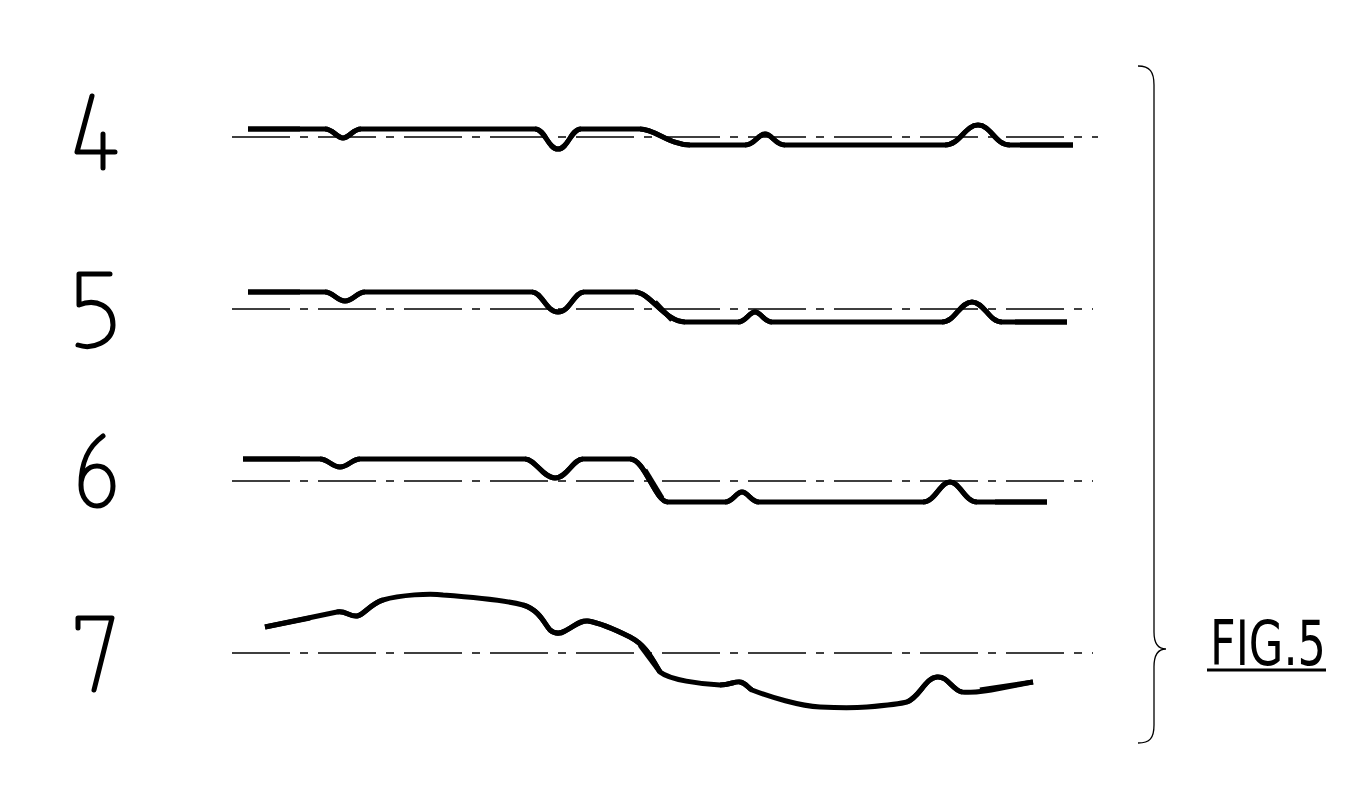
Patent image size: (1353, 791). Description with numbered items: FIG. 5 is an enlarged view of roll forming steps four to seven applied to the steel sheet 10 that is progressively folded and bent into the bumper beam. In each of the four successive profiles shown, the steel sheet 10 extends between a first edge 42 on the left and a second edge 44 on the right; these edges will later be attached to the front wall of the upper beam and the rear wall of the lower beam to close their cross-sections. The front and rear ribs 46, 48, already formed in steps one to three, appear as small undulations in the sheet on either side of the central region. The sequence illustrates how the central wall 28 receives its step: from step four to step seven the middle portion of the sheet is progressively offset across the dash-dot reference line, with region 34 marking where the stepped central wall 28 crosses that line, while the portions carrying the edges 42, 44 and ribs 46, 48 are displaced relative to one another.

The steel sheet 10 is at (415, 127).
The first edge 42 is at (273, 128).
The second edge 44 is at (1062, 140).
The rear rib 48 is at (345, 130).
The front rib 46 is at (555, 150).
The central wall 28 is at (653, 133).
The crossing region 34 is at (665, 315).